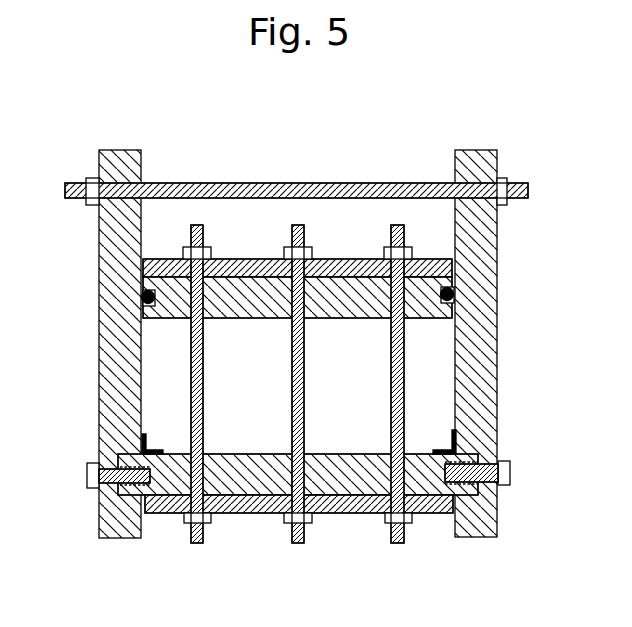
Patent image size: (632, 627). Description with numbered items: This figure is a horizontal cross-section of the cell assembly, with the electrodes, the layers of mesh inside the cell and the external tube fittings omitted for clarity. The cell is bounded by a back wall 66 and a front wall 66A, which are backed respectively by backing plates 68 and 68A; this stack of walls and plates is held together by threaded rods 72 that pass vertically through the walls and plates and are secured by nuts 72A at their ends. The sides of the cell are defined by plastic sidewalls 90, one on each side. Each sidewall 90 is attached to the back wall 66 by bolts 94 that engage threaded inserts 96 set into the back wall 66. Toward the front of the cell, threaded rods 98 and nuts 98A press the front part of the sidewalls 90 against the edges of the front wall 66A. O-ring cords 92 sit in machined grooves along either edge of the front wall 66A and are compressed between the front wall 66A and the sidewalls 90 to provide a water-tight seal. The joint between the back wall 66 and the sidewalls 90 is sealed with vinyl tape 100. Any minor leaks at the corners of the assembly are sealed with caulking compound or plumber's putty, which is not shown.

The plastic sidewalls 90 is at (113, 358).
The O-ring cords 92 is at (452, 293).
The bolts 94 is at (507, 473).
The threaded inserts 96 is at (475, 457).
The threaded rods 98 is at (262, 182).
The nuts 98A is at (500, 178).
The vinyl tape 100 is at (448, 440).
The back wall 66 is at (219, 465).
The front wall 66A is at (320, 297).
The backing plate 68 is at (330, 505).
The backing plate 68A is at (217, 268).
The threaded rods 72 is at (204, 378).
The nuts 72A is at (212, 521).